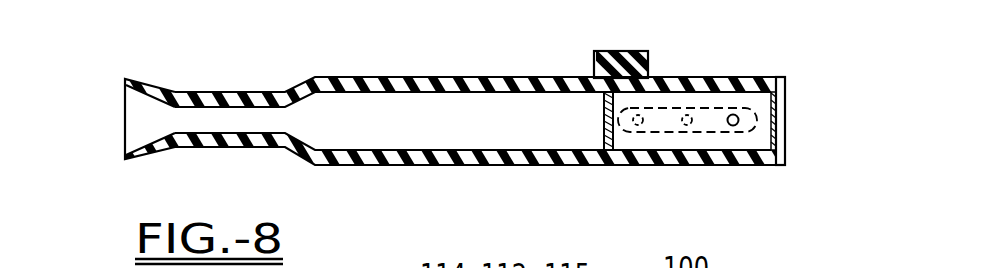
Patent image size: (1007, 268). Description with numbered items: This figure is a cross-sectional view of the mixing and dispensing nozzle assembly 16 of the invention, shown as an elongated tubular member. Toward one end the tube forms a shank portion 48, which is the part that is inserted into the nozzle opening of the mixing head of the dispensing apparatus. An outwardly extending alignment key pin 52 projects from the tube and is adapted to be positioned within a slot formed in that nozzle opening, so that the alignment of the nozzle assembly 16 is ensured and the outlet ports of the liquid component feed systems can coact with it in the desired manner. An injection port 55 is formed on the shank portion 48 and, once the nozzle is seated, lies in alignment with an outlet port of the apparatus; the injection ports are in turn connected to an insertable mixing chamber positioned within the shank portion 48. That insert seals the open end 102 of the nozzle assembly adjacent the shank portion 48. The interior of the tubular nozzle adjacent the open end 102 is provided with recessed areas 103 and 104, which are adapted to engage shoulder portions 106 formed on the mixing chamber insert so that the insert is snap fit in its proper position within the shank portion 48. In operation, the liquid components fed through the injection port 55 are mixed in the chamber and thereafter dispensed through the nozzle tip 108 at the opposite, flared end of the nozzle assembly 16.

The mixing and dispensing nozzle assembly 16 is at (482, 68).
The shank portion 48 is at (733, 166).
The alignment key pin 52 is at (605, 51).
The injection port 55 is at (739, 119).
The open end 102 is at (786, 97).
The recessed area 103 is at (608, 148).
The recessed area 104 is at (688, 95).
The shoulder portion 106 is at (607, 124).
The nozzle tip 108 is at (132, 117).